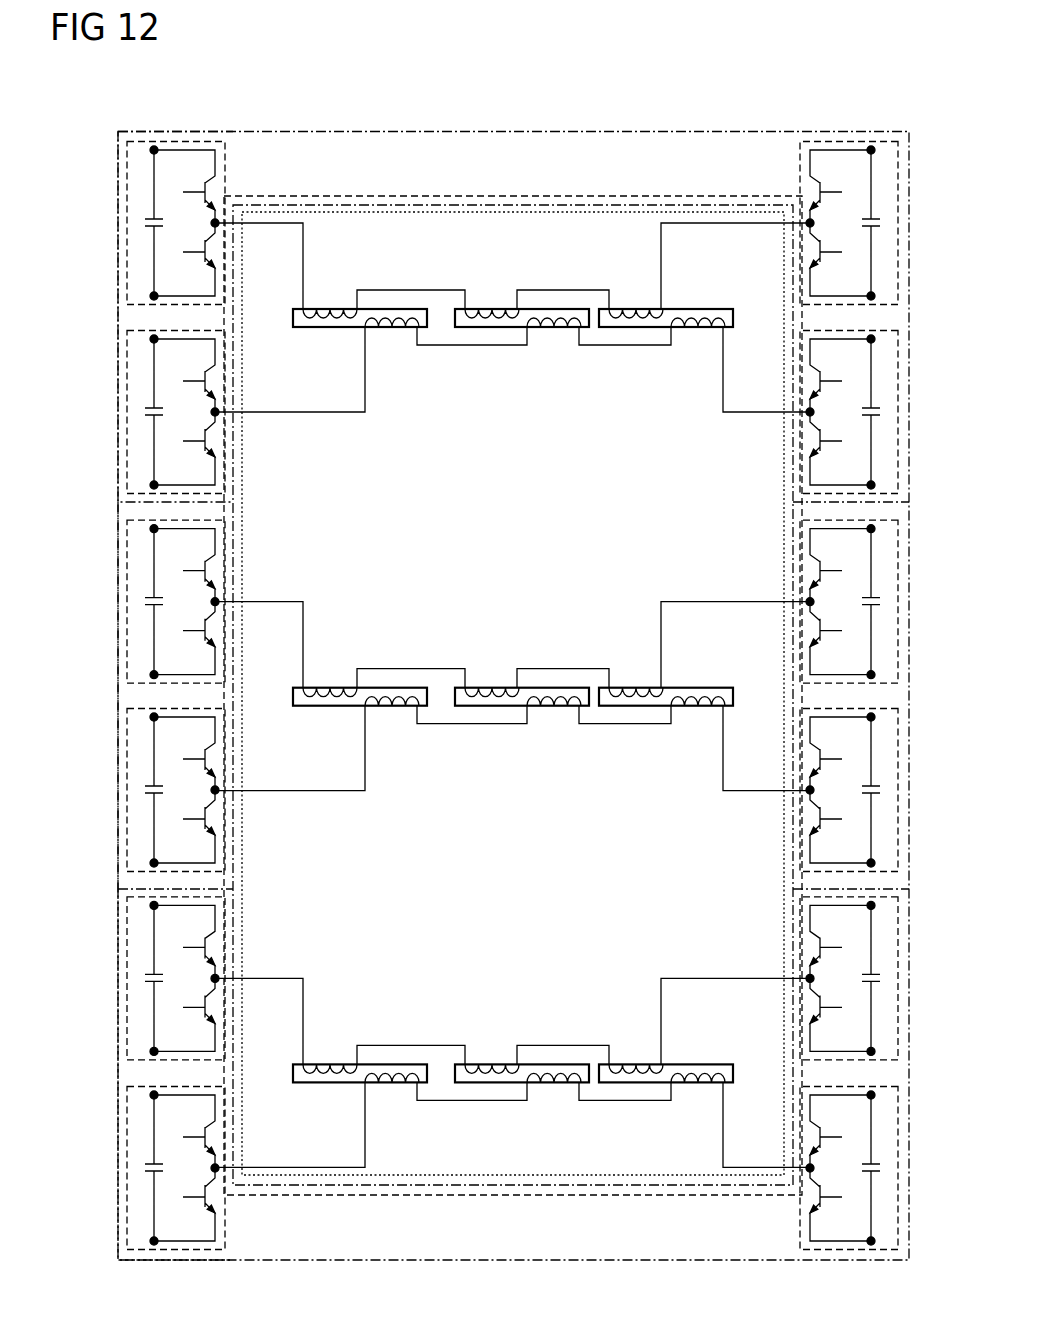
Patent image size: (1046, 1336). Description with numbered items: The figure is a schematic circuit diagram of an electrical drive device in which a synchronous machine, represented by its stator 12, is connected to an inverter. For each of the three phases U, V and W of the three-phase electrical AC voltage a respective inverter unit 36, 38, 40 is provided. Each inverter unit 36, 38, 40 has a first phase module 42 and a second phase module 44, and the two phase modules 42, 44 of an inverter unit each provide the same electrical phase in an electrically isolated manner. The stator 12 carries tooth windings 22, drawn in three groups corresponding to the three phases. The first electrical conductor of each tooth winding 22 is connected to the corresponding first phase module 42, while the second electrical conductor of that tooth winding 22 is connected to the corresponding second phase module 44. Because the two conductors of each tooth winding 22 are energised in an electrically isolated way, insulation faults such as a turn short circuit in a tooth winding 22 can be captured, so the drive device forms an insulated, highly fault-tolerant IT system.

The stator 12 is at (244, 873).
The tooth winding 22 is at (513, 657).
The inverter unit 36 is at (118, 320).
The inverter unit 38 is at (118, 695).
The inverter unit 40 is at (118, 1078).
The first phase module 42 is at (127, 602).
The second phase module 44 is at (127, 412).